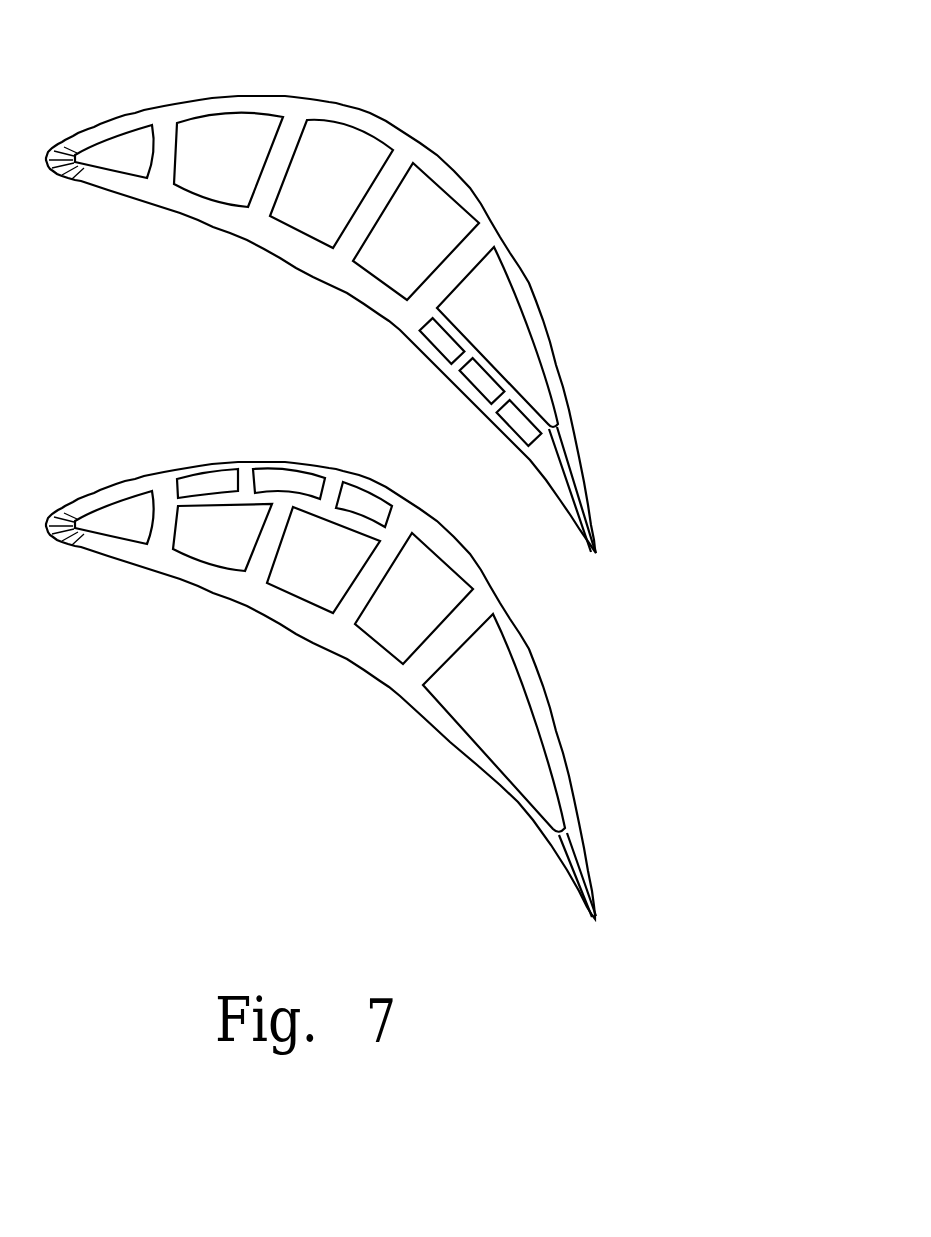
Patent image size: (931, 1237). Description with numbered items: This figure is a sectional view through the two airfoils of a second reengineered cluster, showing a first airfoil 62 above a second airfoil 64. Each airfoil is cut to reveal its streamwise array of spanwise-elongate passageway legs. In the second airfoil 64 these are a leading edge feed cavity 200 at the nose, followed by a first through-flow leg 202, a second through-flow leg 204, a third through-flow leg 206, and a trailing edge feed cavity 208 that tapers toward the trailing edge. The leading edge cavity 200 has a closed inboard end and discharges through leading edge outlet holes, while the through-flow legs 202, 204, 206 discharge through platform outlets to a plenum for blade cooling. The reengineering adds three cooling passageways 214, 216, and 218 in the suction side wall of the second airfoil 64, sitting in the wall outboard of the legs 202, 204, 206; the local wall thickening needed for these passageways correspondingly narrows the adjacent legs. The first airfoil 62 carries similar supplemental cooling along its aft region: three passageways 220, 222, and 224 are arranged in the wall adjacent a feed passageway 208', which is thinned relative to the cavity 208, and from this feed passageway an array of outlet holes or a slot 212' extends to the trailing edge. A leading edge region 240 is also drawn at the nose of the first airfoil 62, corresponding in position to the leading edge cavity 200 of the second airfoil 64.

The first airfoil 62 is at (359, 286).
The second airfoil 64 is at (350, 670).
The leading edge feed cavity 200 is at (118, 509).
The first through-flow leg 202 is at (242, 539).
The second through-flow leg 204 is at (337, 569).
The third through-flow leg 206 is at (435, 613).
The trailing edge feed cavity 208 is at (509, 765).
The feed passageway 208' is at (529, 337).
The array of outlet holes or slot 212' is at (610, 489).
The cooling passageway 214 is at (212, 479).
The cooling passageway 216 is at (290, 480).
The cooling passageway 218 is at (367, 502).
The passageway 220 is at (446, 341).
The passageway 222 is at (481, 389).
The passageway 224 is at (521, 432).
The leading edge cavity 240 is at (125, 158).